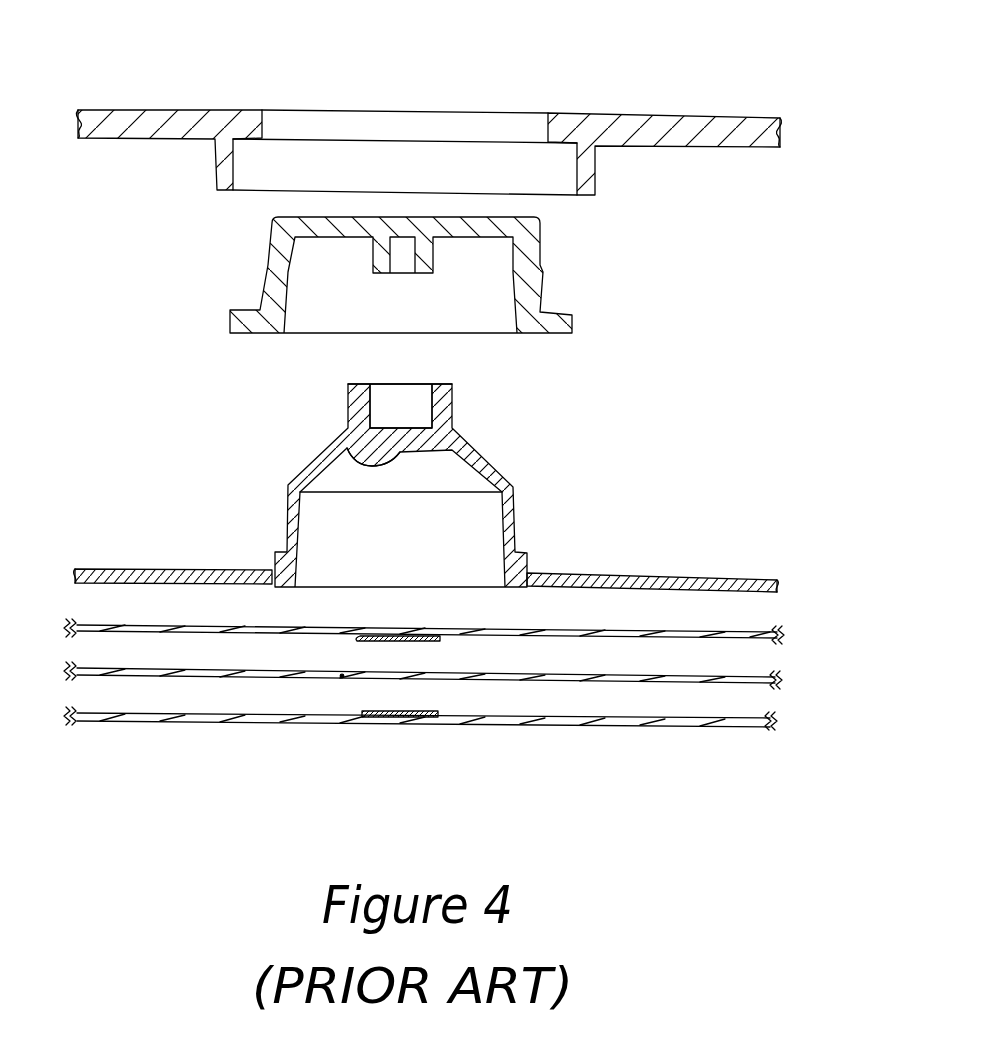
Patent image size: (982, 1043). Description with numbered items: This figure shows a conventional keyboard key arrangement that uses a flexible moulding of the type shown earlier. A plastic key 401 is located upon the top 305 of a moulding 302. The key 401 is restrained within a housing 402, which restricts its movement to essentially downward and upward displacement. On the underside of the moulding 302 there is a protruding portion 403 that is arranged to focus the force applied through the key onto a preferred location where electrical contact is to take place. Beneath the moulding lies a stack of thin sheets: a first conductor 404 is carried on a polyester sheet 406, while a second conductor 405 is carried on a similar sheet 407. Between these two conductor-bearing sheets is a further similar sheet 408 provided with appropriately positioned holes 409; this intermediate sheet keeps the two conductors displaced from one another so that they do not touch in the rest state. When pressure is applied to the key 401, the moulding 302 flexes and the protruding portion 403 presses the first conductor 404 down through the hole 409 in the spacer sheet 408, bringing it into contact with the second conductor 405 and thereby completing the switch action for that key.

The housing 402 is at (410, 177).
The plastic key 401 is at (541, 256).
The top of moulding 305 is at (452, 382).
The moulding 302 is at (425, 479).
The protruding portion 403 is at (368, 466).
The first conductor 404 is at (418, 633).
The polyester sheet 406 is at (723, 633).
The spacer sheet 408 is at (728, 678).
The hole 409 is at (365, 680).
The second conductor 405 is at (407, 727).
The sheet 407 is at (667, 723).